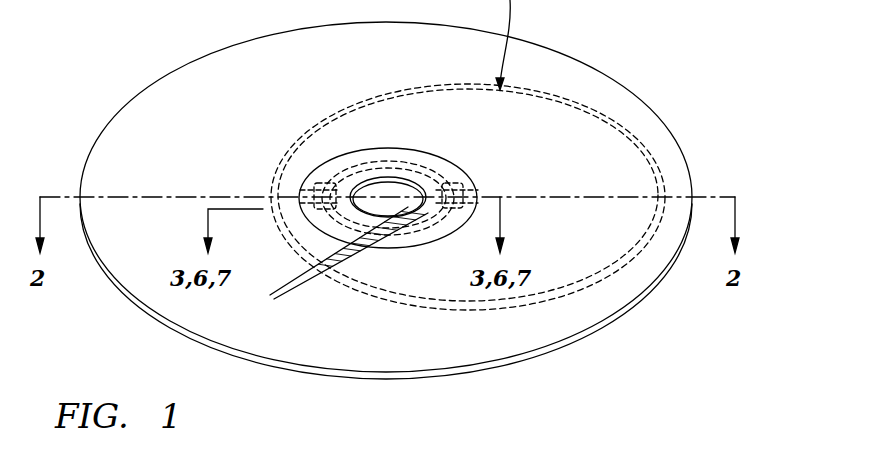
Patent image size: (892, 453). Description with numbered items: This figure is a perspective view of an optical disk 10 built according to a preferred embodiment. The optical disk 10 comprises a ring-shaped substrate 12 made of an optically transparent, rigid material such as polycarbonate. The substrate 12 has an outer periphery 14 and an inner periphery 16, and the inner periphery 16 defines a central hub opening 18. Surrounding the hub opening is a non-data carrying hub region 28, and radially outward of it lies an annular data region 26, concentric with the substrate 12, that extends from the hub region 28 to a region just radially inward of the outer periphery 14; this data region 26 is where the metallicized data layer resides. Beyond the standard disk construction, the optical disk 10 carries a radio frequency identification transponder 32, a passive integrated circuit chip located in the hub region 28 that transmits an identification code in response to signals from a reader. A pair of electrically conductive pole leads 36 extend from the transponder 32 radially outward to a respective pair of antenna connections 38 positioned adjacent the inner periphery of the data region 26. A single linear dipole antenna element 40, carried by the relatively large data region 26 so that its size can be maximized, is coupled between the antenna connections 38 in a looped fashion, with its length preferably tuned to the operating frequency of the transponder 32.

The optical disk 10 is at (660, 44).
The ring-shaped substrate 12 is at (647, 299).
The outer periphery 14 is at (687, 147).
The inner periphery 16 is at (390, 148).
The hub opening 18 is at (375, 190).
The data region 26 is at (152, 108).
The hub region 28 is at (437, 228).
The RFID transponder 32 is at (458, 183).
The pole leads 36 is at (413, 160).
The antenna connections 38 is at (318, 207).
The antenna element 40 is at (538, 300).